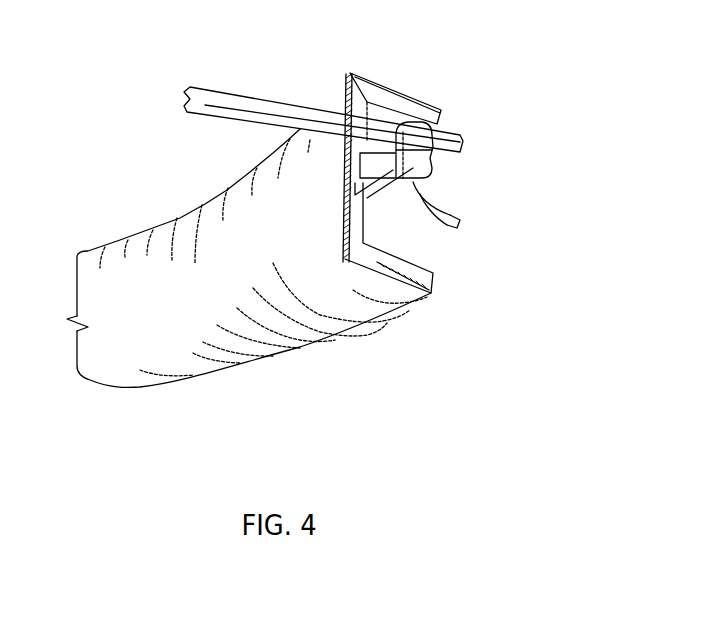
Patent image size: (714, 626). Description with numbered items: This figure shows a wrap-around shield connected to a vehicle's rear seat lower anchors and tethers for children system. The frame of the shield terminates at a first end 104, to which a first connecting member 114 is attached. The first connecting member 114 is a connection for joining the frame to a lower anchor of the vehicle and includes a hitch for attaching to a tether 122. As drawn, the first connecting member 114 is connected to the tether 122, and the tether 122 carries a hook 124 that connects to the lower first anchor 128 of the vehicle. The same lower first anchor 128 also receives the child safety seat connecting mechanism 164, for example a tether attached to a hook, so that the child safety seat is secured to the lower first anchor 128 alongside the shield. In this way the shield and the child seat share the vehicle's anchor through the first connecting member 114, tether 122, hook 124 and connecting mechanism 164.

The first end 104 is at (137, 273).
The first connecting member 114 is at (357, 185).
The tether 122 is at (386, 160).
The hook 124 is at (425, 172).
The lower first anchor 128 is at (463, 219).
The child safety seat connecting mechanism 164 is at (327, 110).